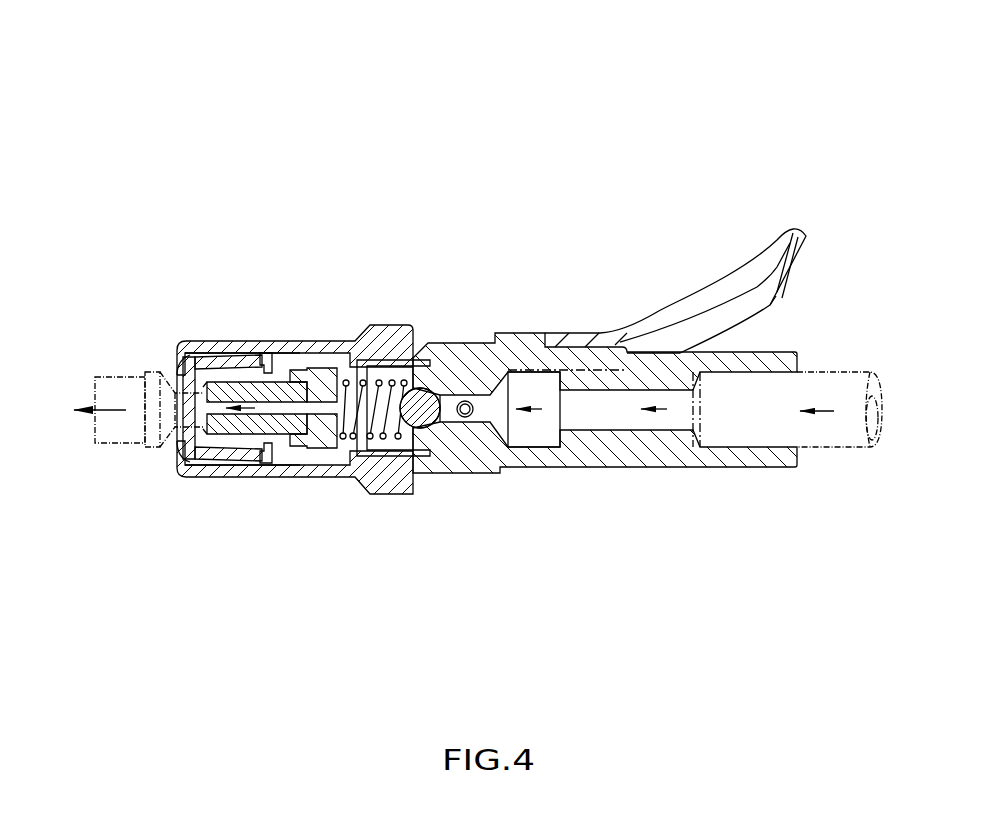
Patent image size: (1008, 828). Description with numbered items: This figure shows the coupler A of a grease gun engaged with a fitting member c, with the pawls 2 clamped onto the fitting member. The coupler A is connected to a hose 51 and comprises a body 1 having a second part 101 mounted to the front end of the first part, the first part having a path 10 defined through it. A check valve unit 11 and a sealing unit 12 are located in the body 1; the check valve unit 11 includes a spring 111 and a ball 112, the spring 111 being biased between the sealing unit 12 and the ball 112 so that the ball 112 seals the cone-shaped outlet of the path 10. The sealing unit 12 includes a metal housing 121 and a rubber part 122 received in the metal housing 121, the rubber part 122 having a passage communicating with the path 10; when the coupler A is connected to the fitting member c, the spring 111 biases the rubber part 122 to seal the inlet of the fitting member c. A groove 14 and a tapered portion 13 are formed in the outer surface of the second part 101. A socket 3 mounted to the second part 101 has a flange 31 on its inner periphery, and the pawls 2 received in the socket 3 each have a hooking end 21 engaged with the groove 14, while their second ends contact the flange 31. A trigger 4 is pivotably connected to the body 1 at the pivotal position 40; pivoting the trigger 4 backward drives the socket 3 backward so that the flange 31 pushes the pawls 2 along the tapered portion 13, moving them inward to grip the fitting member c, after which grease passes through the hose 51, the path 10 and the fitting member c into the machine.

The coupler A is at (369, 108).
The fitting member c is at (131, 374).
The body 1 is at (604, 426).
The path 10 is at (537, 430).
The second part 101 is at (431, 460).
The check valve unit 11 is at (414, 302).
The spring 111 is at (380, 384).
The ball 112 is at (431, 387).
The sealing unit 12 is at (352, 325).
The metal housing 121 is at (283, 370).
The rubber part 122 is at (374, 371).
The tapered portion 13 is at (212, 350).
The groove 14 is at (270, 382).
The pawls 2 is at (222, 466).
The hooking end 21 is at (181, 440).
The socket 3 is at (279, 372).
The flange 31 is at (176, 364).
The trigger 4 is at (707, 296).
The pivotal position 40 is at (468, 395).
The hose 51 is at (826, 372).